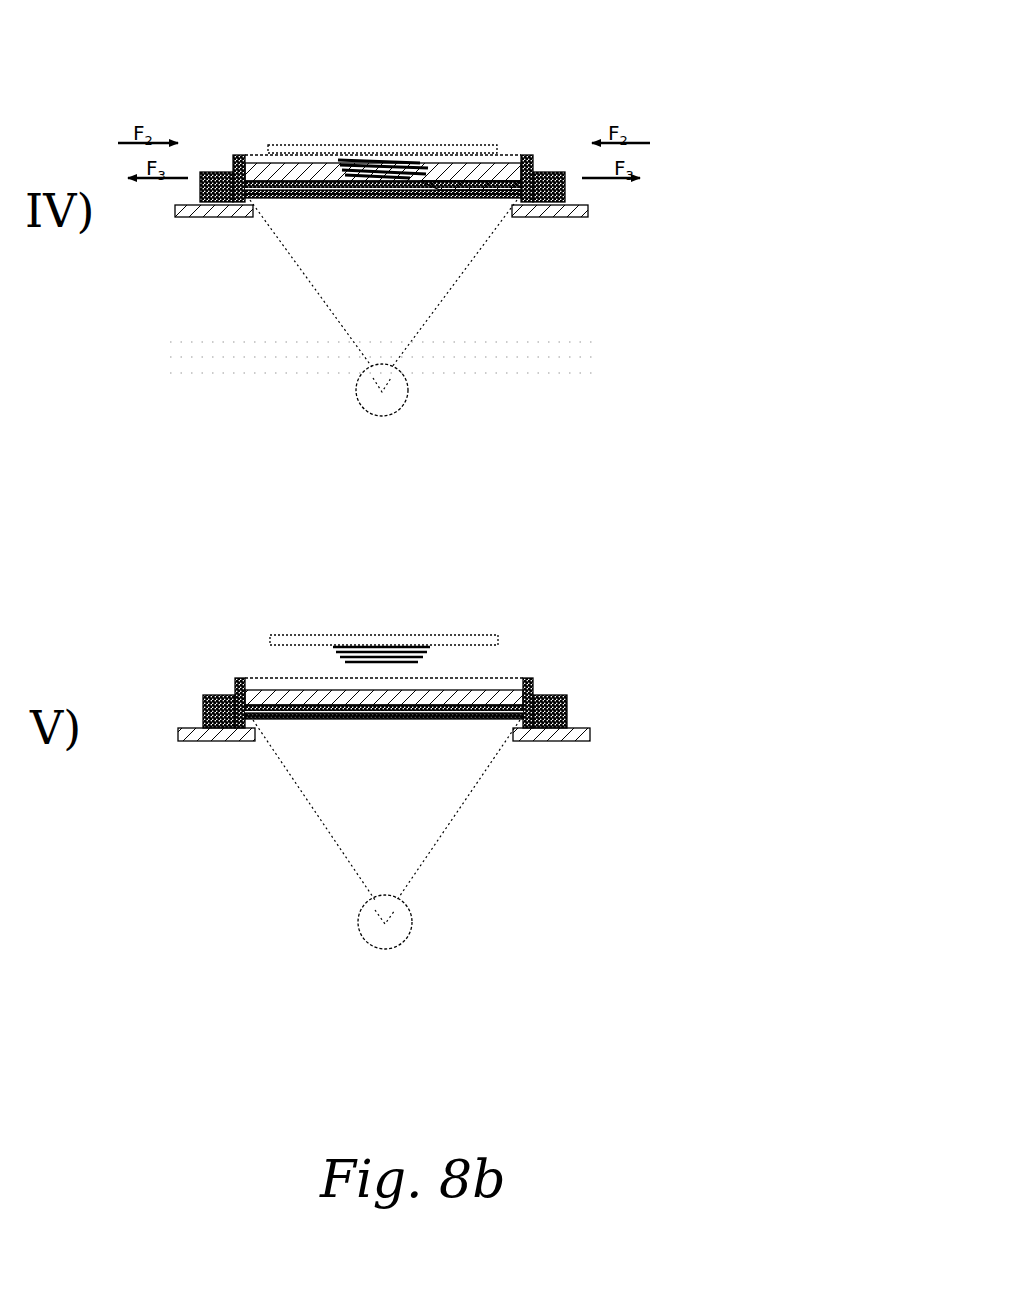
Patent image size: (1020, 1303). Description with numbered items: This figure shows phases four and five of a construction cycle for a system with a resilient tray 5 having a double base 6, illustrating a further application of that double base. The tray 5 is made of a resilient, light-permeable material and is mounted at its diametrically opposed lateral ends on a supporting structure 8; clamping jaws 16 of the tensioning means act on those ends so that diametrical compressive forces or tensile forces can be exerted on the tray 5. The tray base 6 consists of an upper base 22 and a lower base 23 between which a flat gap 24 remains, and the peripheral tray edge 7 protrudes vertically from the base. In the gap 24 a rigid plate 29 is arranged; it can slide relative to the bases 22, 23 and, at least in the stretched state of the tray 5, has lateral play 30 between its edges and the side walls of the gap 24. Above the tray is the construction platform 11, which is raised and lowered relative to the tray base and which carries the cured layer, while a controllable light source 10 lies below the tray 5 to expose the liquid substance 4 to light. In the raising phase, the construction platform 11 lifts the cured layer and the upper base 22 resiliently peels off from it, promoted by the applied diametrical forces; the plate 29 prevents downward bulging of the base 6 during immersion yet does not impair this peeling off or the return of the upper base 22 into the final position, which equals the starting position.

The tray 5 is at (620, 70).
The liquid substance 4 is at (273, 170).
The tray base 6 is at (424, 724).
The tray edge 7 is at (527, 157).
The supporting structure 8 is at (202, 707).
The controllable light source 10 is at (407, 393).
The construction platform 11 is at (458, 147).
The clamping jaw 16 is at (177, 212).
The upper base 22 is at (333, 189).
The lower base 23 is at (295, 190).
The gap 24 is at (373, 184).
The rigid plate 29 is at (412, 192).
The lateral play 30 is at (507, 194).